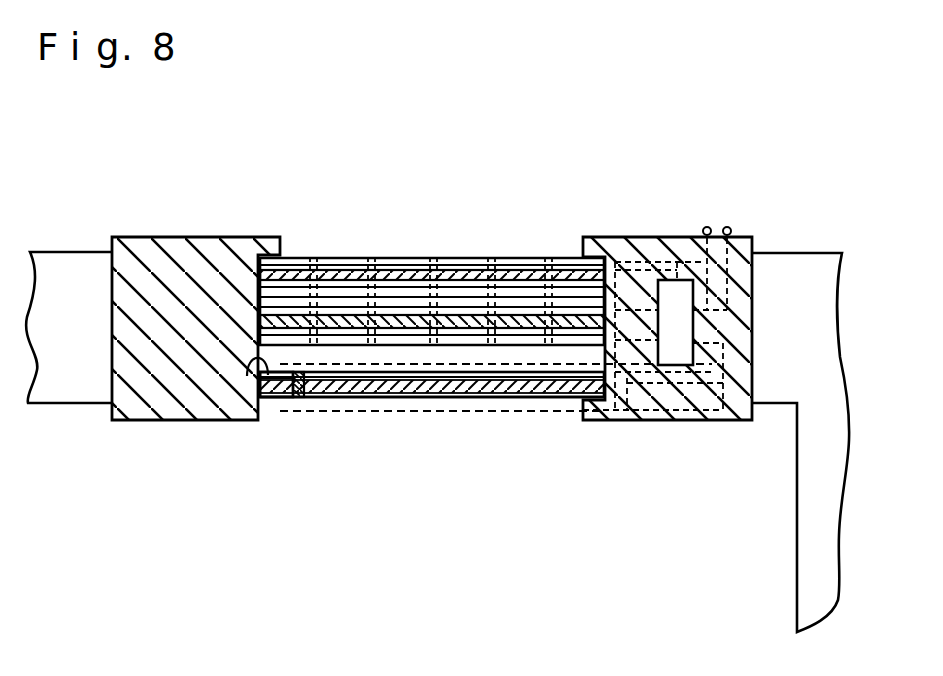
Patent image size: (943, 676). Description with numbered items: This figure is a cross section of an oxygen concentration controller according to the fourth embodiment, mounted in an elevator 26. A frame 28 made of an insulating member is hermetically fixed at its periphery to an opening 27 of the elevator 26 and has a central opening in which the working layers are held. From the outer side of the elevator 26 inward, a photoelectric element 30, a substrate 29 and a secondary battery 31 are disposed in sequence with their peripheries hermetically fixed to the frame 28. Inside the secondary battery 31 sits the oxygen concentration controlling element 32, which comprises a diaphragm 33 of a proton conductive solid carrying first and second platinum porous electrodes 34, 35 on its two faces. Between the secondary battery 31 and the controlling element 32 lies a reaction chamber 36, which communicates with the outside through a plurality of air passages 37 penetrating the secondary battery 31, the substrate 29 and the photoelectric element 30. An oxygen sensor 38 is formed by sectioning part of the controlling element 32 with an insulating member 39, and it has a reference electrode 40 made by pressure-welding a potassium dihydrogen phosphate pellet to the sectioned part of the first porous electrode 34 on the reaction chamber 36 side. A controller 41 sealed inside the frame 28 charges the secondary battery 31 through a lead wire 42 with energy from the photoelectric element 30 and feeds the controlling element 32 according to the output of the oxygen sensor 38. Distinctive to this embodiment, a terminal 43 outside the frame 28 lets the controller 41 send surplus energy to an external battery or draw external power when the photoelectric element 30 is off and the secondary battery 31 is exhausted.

The elevator 26 is at (80, 263).
The opening 27 is at (416, 212).
The frame 28 is at (182, 252).
The substrate 29 is at (344, 302).
The photoelectric element 30 is at (541, 282).
The secondary battery 31 is at (463, 305).
The oxygen concentration controlling element 32 is at (528, 397).
The diaphragm 33 is at (419, 396).
The first platinum porous electrode 34 is at (462, 392).
The second platinum porous electrode 35 is at (372, 398).
The reaction chamber 36 is at (542, 356).
The air passages 37 is at (312, 258).
The oxygen sensor 38 is at (279, 400).
The insulating member 39 is at (297, 400).
The reference electrode 40 is at (247, 376).
The controller 41 is at (681, 297).
The lead wire 42 is at (630, 258).
The terminal 43 is at (731, 226).